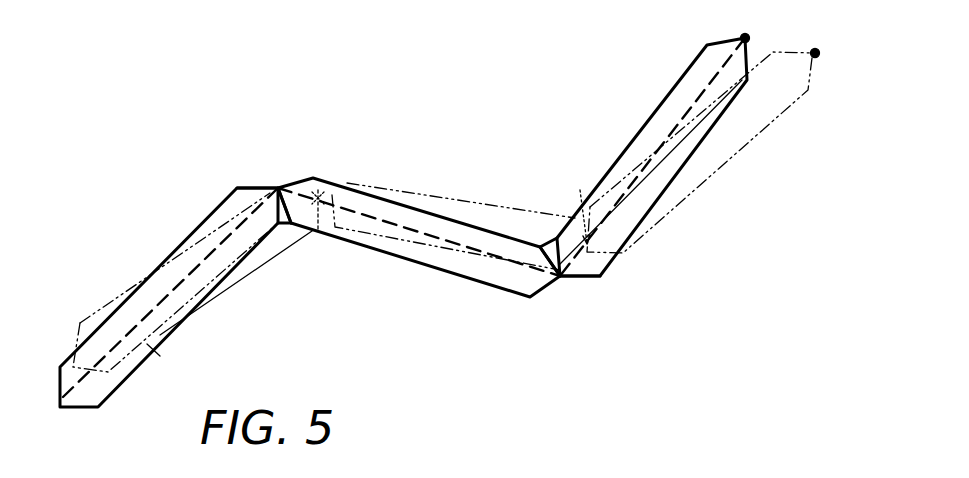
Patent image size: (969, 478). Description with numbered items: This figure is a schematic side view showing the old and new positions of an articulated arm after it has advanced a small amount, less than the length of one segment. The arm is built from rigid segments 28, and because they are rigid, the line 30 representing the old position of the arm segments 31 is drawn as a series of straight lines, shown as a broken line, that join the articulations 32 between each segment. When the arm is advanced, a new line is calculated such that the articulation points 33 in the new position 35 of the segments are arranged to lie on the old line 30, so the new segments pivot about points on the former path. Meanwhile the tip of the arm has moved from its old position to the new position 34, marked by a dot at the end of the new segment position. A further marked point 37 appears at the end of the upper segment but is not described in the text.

The segments 28 is at (243, 262).
The line representing the old position of the arm 30 is at (153, 351).
The arm segments 31 is at (80, 408).
The articulations 32 is at (278, 187).
The articulation points 33 is at (318, 197).
The new position of the tip 34 is at (822, 30).
The new position of the segments 35 is at (117, 297).
The end point 37 is at (745, 38).